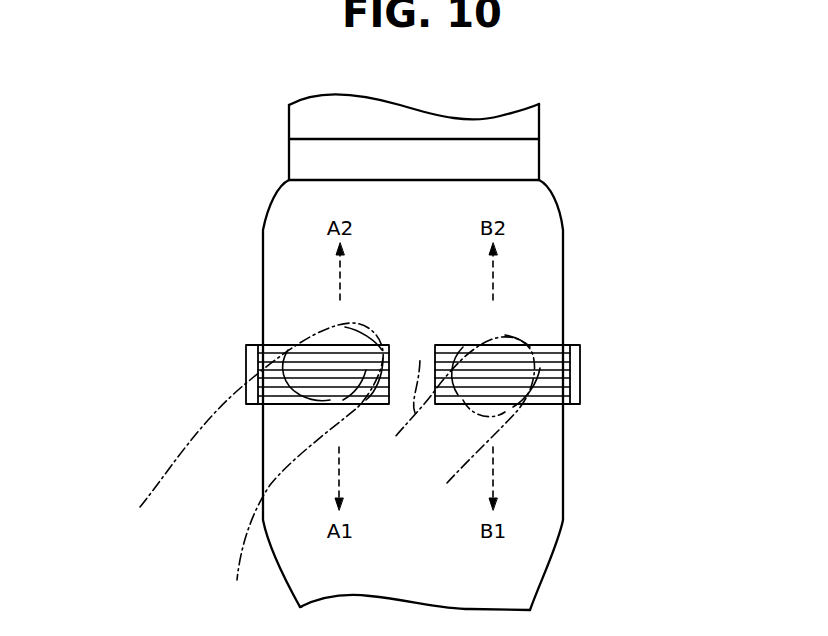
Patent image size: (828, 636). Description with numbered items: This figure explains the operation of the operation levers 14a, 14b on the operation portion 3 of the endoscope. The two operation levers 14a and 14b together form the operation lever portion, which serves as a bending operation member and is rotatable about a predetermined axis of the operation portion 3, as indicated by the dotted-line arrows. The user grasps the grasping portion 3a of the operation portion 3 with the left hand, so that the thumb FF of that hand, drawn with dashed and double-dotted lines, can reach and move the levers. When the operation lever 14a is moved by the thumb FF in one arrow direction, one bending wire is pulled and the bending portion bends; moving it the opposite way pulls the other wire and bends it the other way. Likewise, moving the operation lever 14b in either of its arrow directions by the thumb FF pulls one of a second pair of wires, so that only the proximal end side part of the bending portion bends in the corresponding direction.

The operation portion 3 is at (563, 257).
The grasping portion 3a is at (533, 583).
The operation lever 14a is at (253, 373).
The operation lever 14b is at (577, 373).
The thumb FF is at (177, 463).